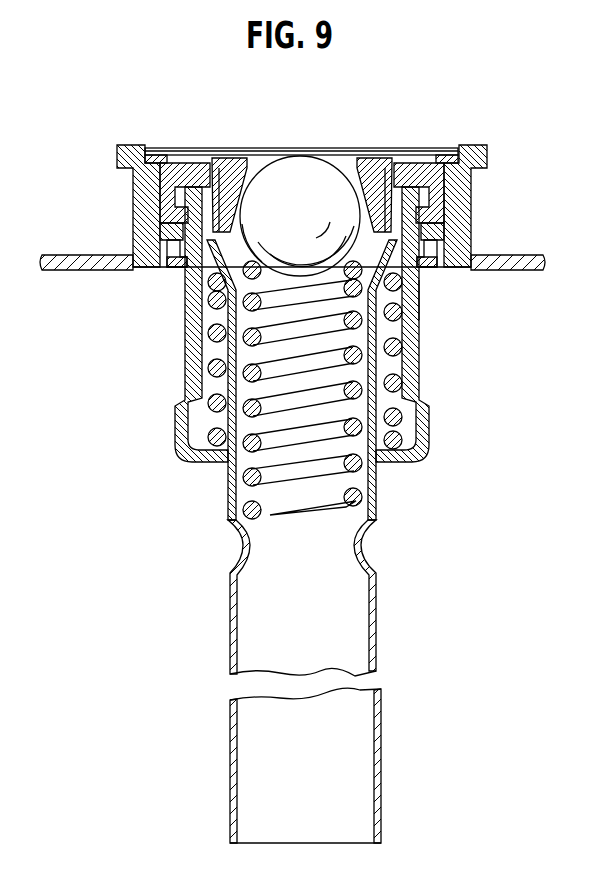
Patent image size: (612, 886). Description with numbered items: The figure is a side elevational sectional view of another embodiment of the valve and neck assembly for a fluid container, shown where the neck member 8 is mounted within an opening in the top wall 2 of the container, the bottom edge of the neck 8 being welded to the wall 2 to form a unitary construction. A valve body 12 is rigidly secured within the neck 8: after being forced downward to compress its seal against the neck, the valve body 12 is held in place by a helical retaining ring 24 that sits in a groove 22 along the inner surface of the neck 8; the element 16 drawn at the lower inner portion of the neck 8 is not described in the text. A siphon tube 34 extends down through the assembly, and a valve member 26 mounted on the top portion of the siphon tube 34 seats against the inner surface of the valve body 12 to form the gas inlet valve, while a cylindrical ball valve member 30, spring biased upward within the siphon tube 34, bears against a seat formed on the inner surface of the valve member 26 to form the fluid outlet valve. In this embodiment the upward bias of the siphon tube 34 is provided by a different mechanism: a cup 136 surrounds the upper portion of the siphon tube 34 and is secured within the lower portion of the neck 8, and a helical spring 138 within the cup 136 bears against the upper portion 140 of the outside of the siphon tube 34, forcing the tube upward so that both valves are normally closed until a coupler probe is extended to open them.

The top wall 2 is at (510, 255).
The neck member 8 is at (473, 214).
The valve body 12 is at (183, 162).
The retaining ring 16 is at (163, 229).
The groove 22 is at (453, 155).
The helical retaining ring 24 is at (438, 153).
The valve member 26 is at (228, 162).
The valve member 30 is at (311, 211).
The siphon tube 34 is at (383, 504).
The cup 136 is at (418, 362).
The helical spring 138 is at (421, 296).
The upper portion 140 is at (213, 262).